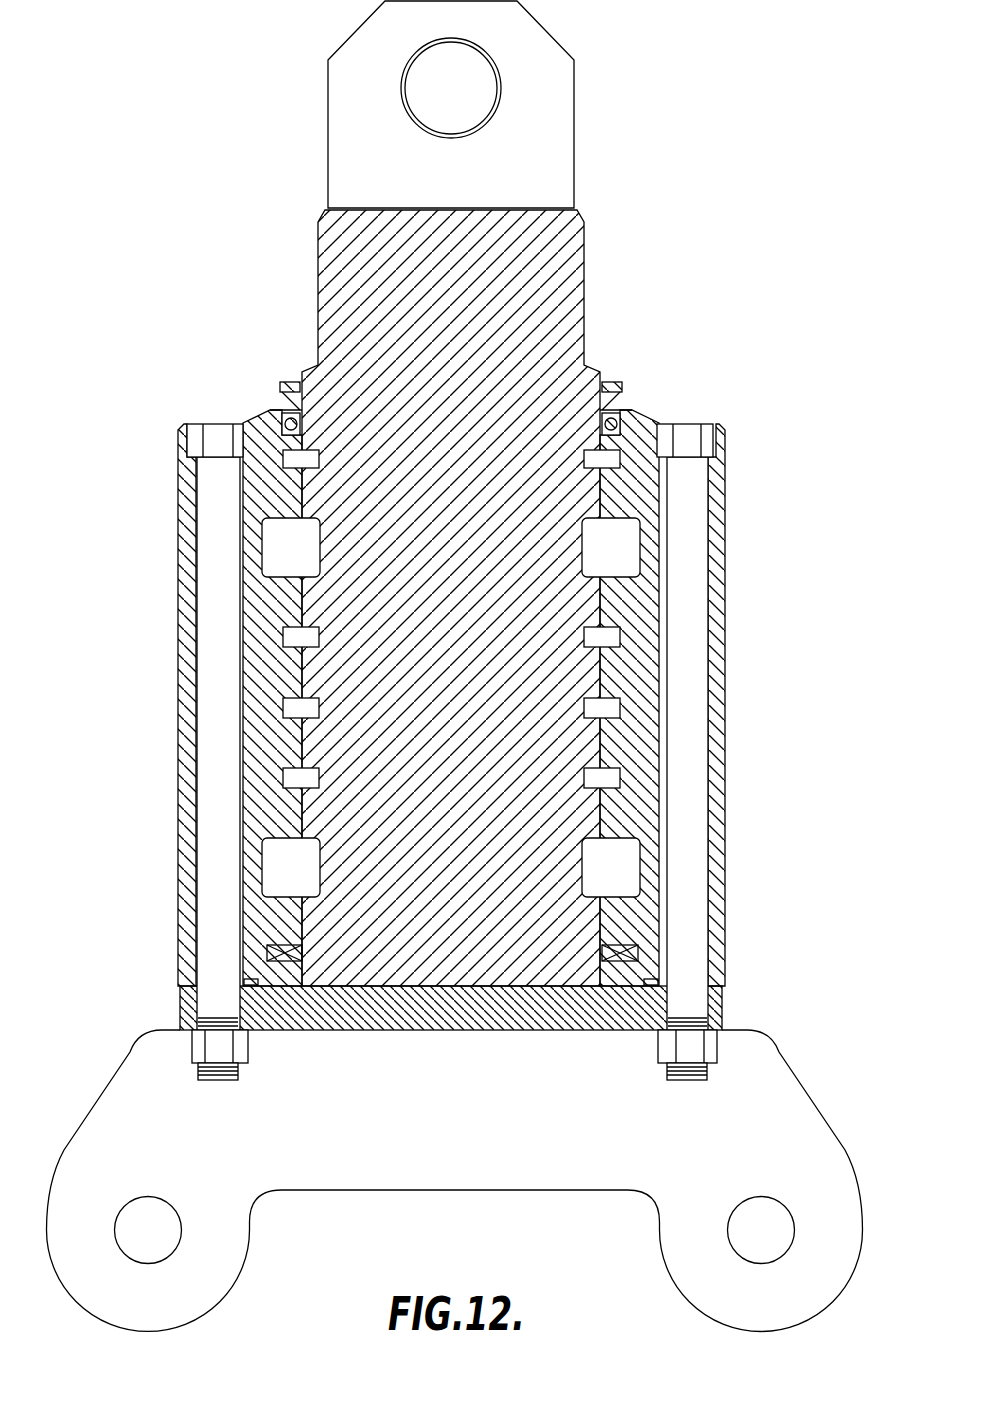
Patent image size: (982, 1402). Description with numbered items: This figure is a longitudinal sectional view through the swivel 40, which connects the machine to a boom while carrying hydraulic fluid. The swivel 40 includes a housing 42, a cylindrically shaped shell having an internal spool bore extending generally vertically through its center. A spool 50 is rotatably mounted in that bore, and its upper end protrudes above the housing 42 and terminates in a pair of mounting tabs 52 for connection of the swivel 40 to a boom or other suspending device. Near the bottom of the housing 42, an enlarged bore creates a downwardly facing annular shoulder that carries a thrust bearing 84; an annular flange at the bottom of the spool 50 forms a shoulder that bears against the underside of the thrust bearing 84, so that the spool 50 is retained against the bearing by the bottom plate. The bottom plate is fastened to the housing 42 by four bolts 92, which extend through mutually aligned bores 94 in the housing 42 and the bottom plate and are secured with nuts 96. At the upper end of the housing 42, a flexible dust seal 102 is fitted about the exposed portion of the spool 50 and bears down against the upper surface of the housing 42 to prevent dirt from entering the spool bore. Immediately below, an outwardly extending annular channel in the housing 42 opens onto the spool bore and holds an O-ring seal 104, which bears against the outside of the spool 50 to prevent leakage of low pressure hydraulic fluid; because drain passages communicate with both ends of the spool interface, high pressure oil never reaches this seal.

The swivel 40 is at (716, 325).
The housing 42 is at (183, 568).
The spool 50 is at (556, 280).
The mounting tab 52 is at (565, 121).
The thrust bearing 84 is at (645, 960).
The bolts 92 is at (212, 430).
The bores 94 is at (196, 613).
The nuts 96 is at (197, 1050).
The flexible dust seal 102 is at (290, 382).
The O-ring seal 104 is at (632, 414).